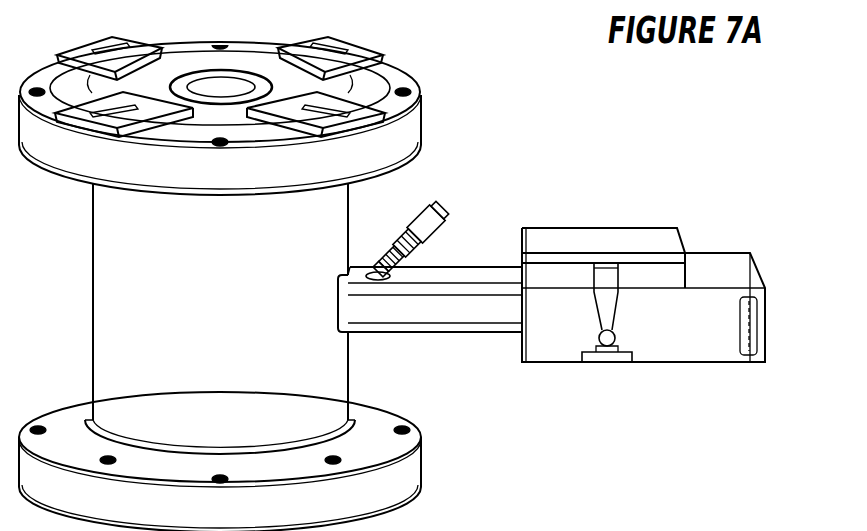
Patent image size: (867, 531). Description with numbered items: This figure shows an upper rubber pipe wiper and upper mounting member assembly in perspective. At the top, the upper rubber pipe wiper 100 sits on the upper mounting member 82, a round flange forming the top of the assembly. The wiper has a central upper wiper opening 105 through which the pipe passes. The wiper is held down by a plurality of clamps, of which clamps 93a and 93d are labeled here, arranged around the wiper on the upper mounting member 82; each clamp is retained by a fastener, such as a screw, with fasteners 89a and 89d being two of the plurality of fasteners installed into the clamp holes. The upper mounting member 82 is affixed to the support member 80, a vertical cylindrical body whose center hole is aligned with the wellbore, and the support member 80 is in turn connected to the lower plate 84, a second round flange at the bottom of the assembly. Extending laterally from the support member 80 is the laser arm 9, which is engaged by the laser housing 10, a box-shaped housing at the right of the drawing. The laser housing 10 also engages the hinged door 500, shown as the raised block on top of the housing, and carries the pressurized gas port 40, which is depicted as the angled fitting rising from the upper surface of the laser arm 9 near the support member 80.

The upper mounting member 82 is at (78, 157).
The lower plate 84 is at (77, 493).
The support member 80 is at (106, 310).
The upper rubber pipe wiper 100 is at (255, 62).
The upper wiper opening 105 is at (219, 78).
The clamp 93a is at (365, 53).
The clamp 93d is at (78, 52).
The laser arm 9 is at (455, 278).
The pressurized gas port 40 is at (377, 268).
The hinged door 500 is at (603, 243).
The laser housing 10 is at (665, 348).
The fastener 89d is at (448, 523).
The fastener 89a is at (680, 523).